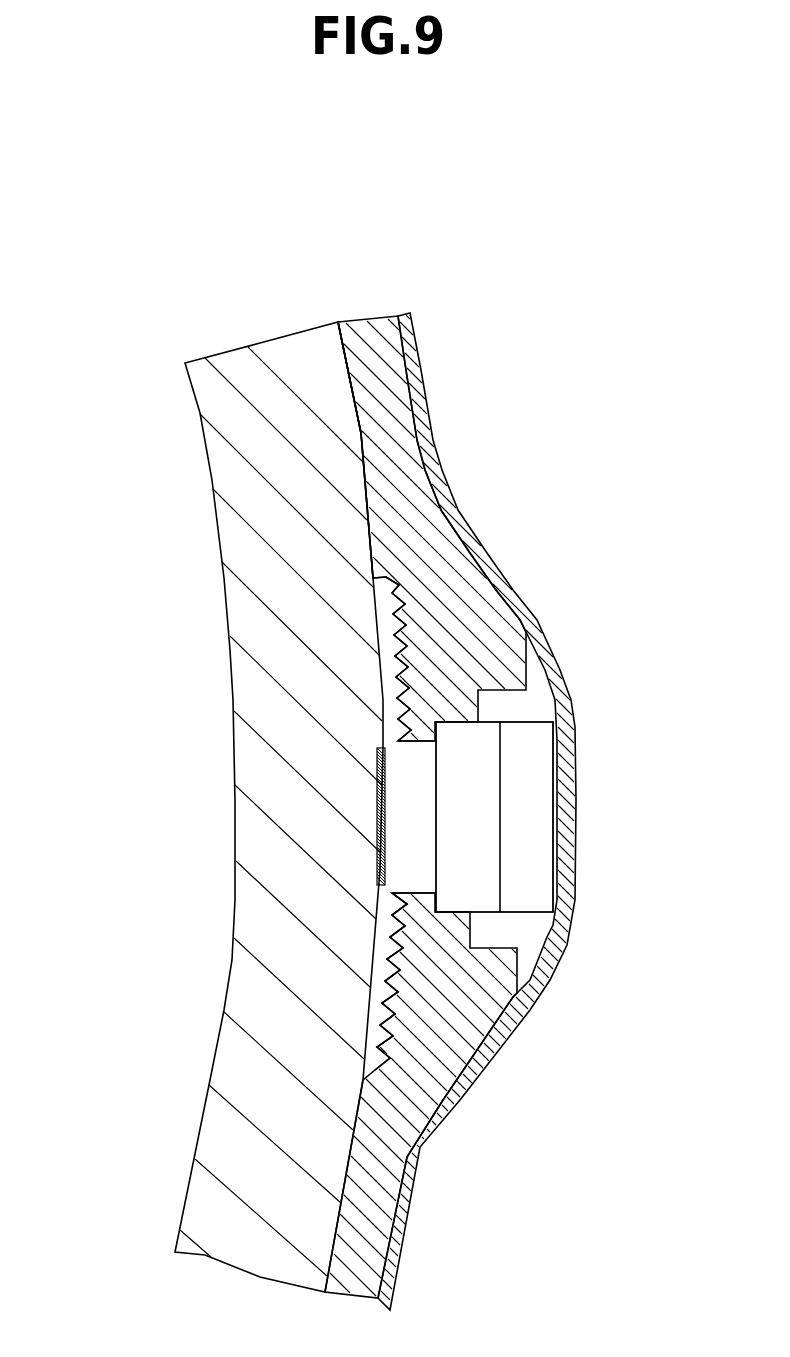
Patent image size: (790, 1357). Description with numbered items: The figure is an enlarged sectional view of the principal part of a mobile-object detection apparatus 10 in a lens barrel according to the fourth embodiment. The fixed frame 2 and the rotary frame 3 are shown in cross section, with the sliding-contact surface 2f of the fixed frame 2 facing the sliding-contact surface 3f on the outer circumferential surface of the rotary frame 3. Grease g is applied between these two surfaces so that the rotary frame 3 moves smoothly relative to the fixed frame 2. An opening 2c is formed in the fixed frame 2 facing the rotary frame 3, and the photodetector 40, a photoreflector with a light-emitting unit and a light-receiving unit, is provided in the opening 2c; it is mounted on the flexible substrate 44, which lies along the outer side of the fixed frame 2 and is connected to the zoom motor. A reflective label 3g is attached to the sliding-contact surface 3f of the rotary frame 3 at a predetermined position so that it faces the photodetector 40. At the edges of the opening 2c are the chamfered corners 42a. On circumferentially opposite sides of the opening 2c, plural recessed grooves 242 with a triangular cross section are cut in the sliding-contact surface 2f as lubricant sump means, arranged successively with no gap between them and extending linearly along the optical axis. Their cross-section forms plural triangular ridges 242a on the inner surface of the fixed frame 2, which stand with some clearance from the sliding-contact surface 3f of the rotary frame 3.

The mobile-object detection apparatus 10 is at (120, 297).
The fixed frame 2 is at (380, 280).
The sliding-contact surface 2f is at (348, 391).
The opening 2c is at (405, 767).
The rotary frame 3 is at (203, 568).
The sliding-contact surface 3f is at (355, 412).
The reflective label 3g is at (435, 853).
The flexible substrate 44 is at (432, 415).
The grease g is at (393, 570).
The recessed grooves 242 is at (403, 677).
The triangular ridges 242a is at (392, 641).
The corners 42a is at (397, 744).
The photodetector 40 is at (522, 822).